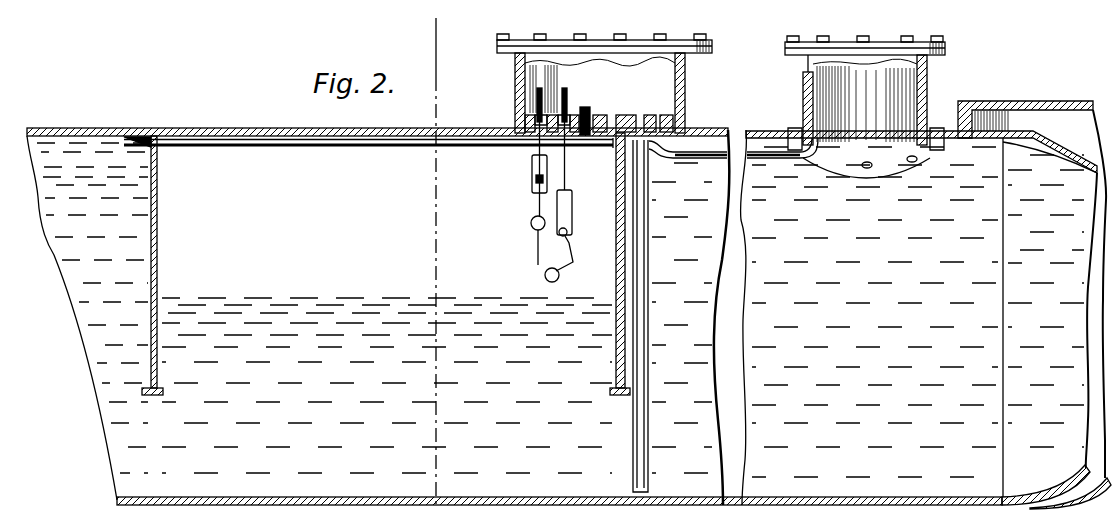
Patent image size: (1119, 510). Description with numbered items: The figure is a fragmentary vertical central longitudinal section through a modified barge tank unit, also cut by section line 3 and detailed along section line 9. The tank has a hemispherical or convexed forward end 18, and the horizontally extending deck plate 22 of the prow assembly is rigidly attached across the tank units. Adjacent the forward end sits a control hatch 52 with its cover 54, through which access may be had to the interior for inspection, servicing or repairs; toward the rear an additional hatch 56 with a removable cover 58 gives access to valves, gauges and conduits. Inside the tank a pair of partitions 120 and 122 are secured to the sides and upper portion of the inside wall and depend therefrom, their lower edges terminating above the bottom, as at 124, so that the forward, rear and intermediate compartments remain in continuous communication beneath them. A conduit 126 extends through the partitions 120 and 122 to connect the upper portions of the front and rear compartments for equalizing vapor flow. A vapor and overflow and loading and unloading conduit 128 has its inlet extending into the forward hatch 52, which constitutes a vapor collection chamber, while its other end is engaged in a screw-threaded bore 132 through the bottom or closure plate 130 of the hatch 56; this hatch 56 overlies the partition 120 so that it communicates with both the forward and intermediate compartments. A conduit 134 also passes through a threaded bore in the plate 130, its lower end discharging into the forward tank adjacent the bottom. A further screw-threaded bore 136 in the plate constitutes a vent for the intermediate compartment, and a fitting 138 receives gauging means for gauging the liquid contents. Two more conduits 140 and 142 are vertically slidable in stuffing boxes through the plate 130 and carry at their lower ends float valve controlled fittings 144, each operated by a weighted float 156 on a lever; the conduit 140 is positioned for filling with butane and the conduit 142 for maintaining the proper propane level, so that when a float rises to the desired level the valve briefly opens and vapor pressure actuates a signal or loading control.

The section line 3- 3 is at (452, 27).
The section line 9- 9 is at (532, 243).
The forward end 18 is at (1065, 155).
The deck plate 22 is at (1000, 102).
The control hatch 52 is at (925, 95).
The cover 54 is at (878, 44).
The hatch 56 is at (687, 107).
The removable cover 58 is at (632, 44).
The partition 120 is at (618, 172).
The partition 122 is at (158, 211).
The lower edge 124 is at (161, 393).
The conduit 126 is at (254, 148).
The vapor and overflow and loading and unloading conduit 128 is at (733, 169).
The closure plate 130 is at (632, 114).
The screw-threaded bore 132 is at (668, 125).
The conduit 134 is at (646, 270).
The screw-threaded bore 136 is at (608, 113).
The fitting 138 is at (585, 102).
The conduit 140 is at (535, 150).
The conduit 142 is at (567, 155).
The float valve controlled fitting 144 is at (531, 170).
The weighted float 156 is at (533, 228).